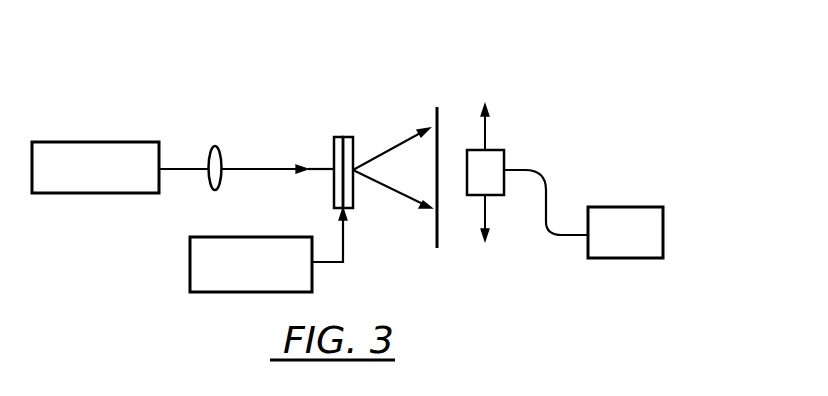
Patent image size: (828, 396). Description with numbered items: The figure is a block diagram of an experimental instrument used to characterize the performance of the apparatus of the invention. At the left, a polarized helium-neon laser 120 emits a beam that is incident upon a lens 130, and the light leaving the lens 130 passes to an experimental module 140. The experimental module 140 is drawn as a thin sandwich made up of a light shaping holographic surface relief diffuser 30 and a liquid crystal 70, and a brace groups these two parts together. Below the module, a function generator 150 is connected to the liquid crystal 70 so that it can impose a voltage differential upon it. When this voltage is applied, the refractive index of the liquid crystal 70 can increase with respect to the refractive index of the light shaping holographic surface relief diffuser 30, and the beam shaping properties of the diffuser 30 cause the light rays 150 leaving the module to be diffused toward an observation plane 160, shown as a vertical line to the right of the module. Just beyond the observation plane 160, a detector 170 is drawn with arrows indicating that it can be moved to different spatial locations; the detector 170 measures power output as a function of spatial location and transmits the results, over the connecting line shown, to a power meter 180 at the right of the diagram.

The polarized helium-neon laser 120 is at (143, 97).
The lens 130 is at (227, 132).
The experimental module 140 is at (348, 125).
The light shaping holographic surface relief diffuser 30 is at (336, 137).
The liquid crystal 70 is at (374, 144).
The function generator 150 is at (397, 147).
The observation plane 160 is at (437, 111).
The detector 170 is at (505, 150).
The power meter 180 is at (640, 207).